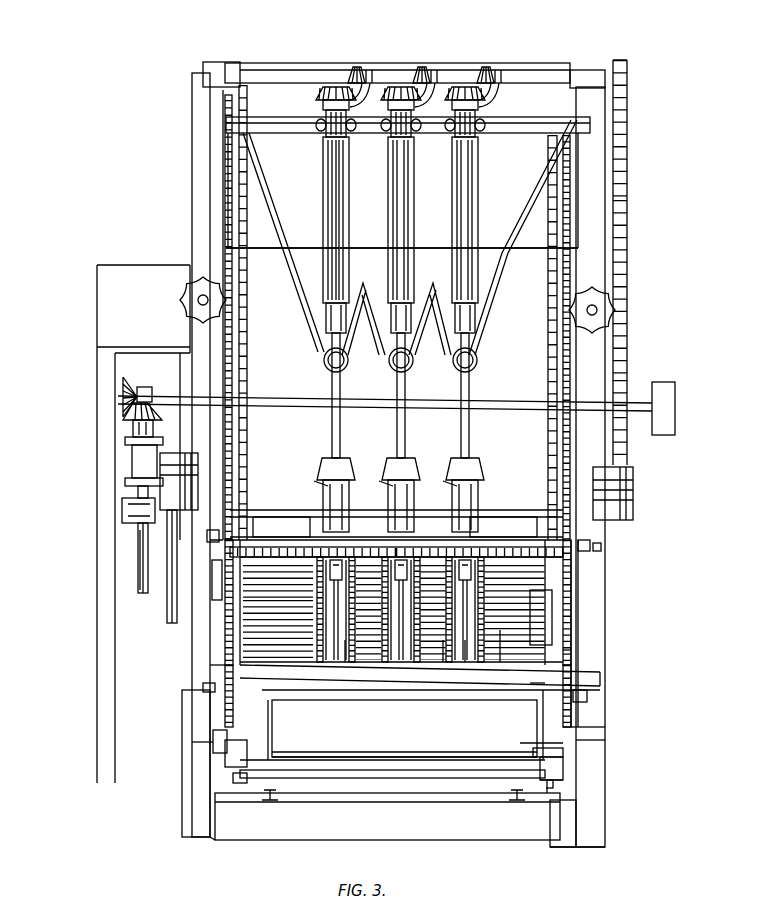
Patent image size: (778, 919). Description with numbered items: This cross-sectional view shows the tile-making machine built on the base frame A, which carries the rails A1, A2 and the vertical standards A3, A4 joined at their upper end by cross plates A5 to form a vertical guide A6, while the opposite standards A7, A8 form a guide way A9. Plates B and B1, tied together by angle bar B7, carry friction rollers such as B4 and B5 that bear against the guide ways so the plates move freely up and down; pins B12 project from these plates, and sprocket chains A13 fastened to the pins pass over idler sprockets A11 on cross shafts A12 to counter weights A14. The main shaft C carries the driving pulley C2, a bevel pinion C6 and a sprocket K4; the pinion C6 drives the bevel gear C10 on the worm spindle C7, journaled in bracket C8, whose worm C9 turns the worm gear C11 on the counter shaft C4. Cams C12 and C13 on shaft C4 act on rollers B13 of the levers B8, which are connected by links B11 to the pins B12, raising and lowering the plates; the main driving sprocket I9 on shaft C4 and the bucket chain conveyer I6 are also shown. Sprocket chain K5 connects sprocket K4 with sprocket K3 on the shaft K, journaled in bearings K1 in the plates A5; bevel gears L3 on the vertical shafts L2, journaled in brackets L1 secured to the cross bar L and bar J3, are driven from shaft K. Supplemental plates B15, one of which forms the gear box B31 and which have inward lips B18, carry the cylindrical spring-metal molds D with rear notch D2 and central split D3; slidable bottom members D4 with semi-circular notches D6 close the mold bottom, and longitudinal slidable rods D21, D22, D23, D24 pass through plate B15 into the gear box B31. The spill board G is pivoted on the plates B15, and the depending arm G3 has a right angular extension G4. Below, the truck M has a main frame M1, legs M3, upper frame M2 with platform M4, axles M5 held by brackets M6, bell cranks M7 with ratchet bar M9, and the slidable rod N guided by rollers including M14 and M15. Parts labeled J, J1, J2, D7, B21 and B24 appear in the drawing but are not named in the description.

The bearings K1 is at (220, 62).
The shaft K is at (305, 80).
The cross plates A5 is at (577, 110).
The cross bar L is at (517, 133).
The hopper J is at (535, 95).
The hopper left wall J1 is at (283, 242).
The hopper partition walls J2 is at (495, 312).
The bar J3 is at (495, 260).
The beveled gears L3 is at (328, 87).
The sprocket chain K5 is at (357, 67).
The journal brackets L1 is at (323, 215).
The vertical shafts L2 is at (337, 226).
The rear notch D2 is at (477, 537).
The depending arm G3 is at (247, 372).
The cam C12 is at (232, 470).
The sprocket gear K3 is at (623, 60).
The sprocket gear K4 is at (623, 387).
The bucket chain conveyer I6 is at (557, 363).
The cam C13 is at (550, 465).
The idler sprockets A11 is at (197, 312).
The cross shafts A12 is at (198, 300).
The sprocket chains A13 is at (180, 368).
The main shaft C is at (660, 407).
The driving pulley C2 is at (668, 392).
The bevel pinion C6 is at (123, 390).
The bevel gear C10 is at (133, 418).
The bracket C8 is at (130, 462).
The worm C9 is at (137, 508).
The worm spindle C7 is at (138, 525).
The worm gear C11 is at (140, 580).
The main driving sprocket I9 is at (167, 573).
The counter weights A14 is at (198, 497).
The spill board G is at (396, 525).
The counter shaft C4 is at (503, 516).
The pins B12 is at (217, 547).
The friction roller B4 is at (167, 575).
The angle bar B7 is at (563, 560).
The right angular extension G4 is at (218, 578).
The molds D is at (395, 672).
The longitudinal slidable rod D21 is at (289, 582).
The longitudinal slidable rod D22 is at (276, 630).
The middle compartment slats D7 is at (392, 612).
The longitudinal slidable rod D23 is at (493, 637).
The gear box B31 is at (533, 598).
The rollers B13 is at (225, 640).
The links B11 is at (222, 710).
The plate B is at (573, 655).
The rail connector B21 is at (213, 623).
The supplemental plates B15 is at (233, 662).
The friction roller B5 is at (203, 687).
The plate B1 is at (213, 665).
The standard A8 is at (192, 700).
The levers B8 is at (213, 713).
The ledge B24 is at (429, 691).
The standard A7 is at (190, 742).
The guide way A9 is at (205, 772).
The truck M is at (407, 725).
The legs M3 is at (263, 740).
The slidable member D4 is at (345, 645).
The semi-circular notches D6 is at (443, 683).
The upper rectangular frame M2 is at (404, 743).
The platform M4 is at (404, 742).
The central split D3 is at (465, 663).
The longitudinal slidable rod D24 is at (500, 640).
The lips B18 is at (533, 683).
The guiding roller M14 is at (543, 747).
The main rectangular frame M1 is at (348, 777).
The base frame A is at (387, 816).
The axles M5 is at (465, 755).
The rail A1 is at (267, 801).
The rail A2 is at (517, 801).
The ratchet bar M9 is at (547, 793).
The vertical standard A4 is at (602, 720).
The vertical guide A6 is at (588, 740).
The longitudinal slidable rod N is at (563, 757).
The brackets M6 is at (563, 767).
The bell cranks M7 is at (553, 777).
The guiding roller M15 is at (563, 780).
The vertical standard A3 is at (592, 838).